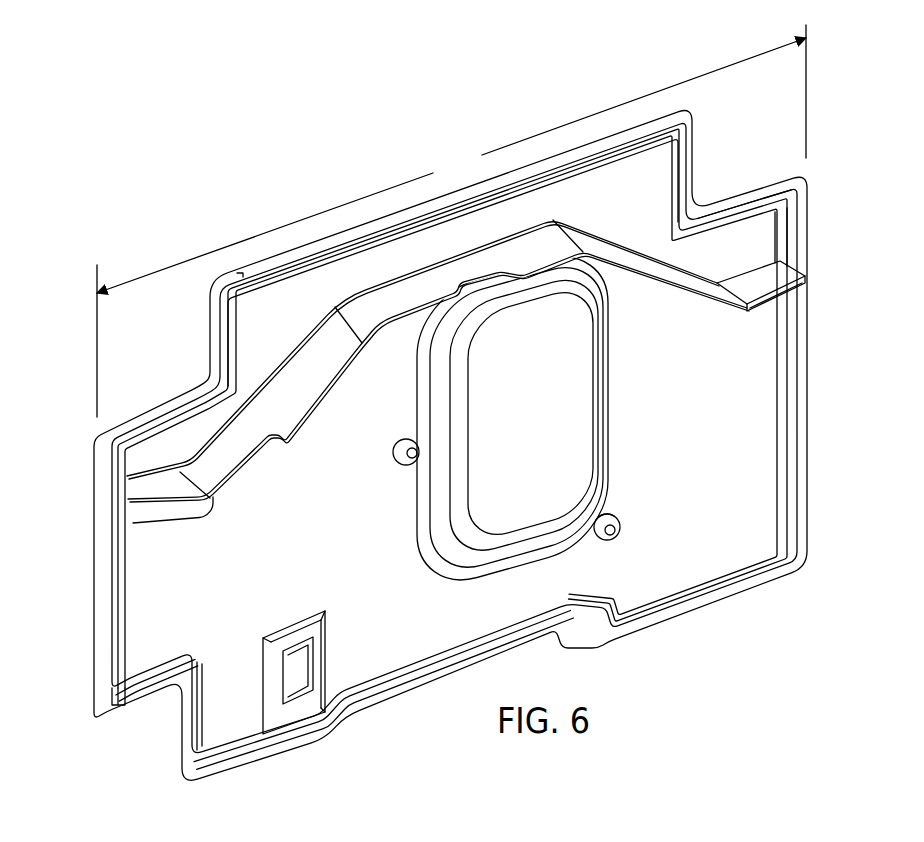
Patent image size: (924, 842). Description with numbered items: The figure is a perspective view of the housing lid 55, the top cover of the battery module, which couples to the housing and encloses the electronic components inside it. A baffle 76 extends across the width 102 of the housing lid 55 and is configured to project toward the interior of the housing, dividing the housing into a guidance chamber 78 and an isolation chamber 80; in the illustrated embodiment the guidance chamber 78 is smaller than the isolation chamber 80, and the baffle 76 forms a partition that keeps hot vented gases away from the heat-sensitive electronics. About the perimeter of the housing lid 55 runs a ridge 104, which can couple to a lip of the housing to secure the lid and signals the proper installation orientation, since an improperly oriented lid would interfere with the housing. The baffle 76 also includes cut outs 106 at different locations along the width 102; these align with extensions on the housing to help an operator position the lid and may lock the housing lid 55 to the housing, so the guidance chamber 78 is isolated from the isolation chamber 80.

The housing lid 55 is at (835, 115).
The baffle 76 is at (748, 316).
The guidance chamber 78 is at (746, 247).
The isolation chamber 80 is at (738, 527).
The width 102 is at (451, 221).
The ridge 104 is at (212, 785).
The cut outs 106 is at (480, 283).